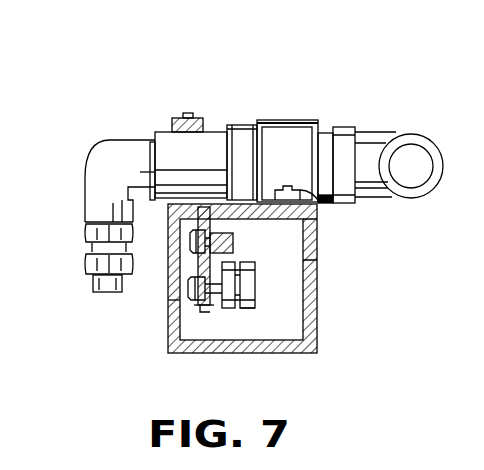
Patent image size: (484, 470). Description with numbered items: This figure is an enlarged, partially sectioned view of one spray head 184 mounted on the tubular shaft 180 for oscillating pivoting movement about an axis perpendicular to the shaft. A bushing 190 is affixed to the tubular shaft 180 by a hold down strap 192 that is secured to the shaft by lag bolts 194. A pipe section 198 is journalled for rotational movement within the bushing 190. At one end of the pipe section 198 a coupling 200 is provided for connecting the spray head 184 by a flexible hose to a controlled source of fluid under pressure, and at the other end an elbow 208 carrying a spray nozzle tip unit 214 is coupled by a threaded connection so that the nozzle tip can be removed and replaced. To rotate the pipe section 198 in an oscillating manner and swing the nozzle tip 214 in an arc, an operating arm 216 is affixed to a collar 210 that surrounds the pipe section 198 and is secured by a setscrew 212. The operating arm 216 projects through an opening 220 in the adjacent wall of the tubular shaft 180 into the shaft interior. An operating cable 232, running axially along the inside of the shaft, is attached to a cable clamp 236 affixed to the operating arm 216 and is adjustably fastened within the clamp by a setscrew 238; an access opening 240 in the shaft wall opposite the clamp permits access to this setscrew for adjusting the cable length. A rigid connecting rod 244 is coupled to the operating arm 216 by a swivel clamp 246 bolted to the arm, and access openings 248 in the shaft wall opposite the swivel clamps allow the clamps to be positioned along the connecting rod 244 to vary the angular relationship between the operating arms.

The tubular shaft 180 is at (313, 290).
The spray head 184 is at (294, 64).
The bushing 190 is at (240, 125).
The hold down strap 192 is at (292, 120).
The lag bolts 194 is at (322, 203).
The pipe section 198 is at (348, 127).
The coupling 200 is at (426, 134).
The elbow 208 is at (118, 150).
The collar 210 is at (165, 132).
The setscrew 212 is at (188, 113).
The spray nozzle tip unit 214 is at (93, 281).
The operating arm 216 is at (208, 307).
The opening 220 is at (238, 210).
The operating cable 232 is at (200, 258).
The cable clamp 236 is at (242, 278).
The setscrew 238 is at (236, 236).
The access opening 240 is at (313, 250).
The connecting rod 244 is at (258, 288).
The swivel clamp 246 is at (243, 308).
The access openings 248 is at (172, 302).